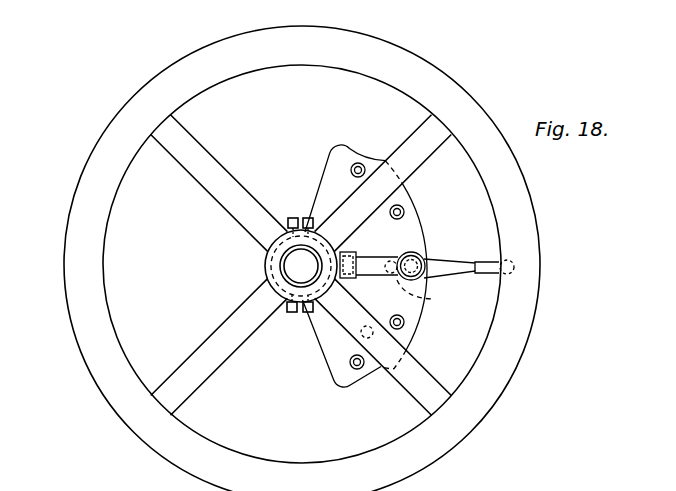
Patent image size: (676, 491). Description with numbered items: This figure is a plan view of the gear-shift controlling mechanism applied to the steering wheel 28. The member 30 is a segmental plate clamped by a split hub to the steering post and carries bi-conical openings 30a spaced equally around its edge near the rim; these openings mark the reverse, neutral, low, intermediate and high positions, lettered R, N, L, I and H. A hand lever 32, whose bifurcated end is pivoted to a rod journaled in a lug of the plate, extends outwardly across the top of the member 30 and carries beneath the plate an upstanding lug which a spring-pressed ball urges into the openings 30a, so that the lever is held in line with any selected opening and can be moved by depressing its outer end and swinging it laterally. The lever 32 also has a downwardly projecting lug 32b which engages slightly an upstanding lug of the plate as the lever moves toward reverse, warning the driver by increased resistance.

The steering wheel 28 is at (87, 218).
The member 30 is at (408, 220).
The bi-conical openings 30a is at (361, 164).
The hand lever 32 is at (443, 268).
The downwardly projecting lug 32b is at (430, 298).